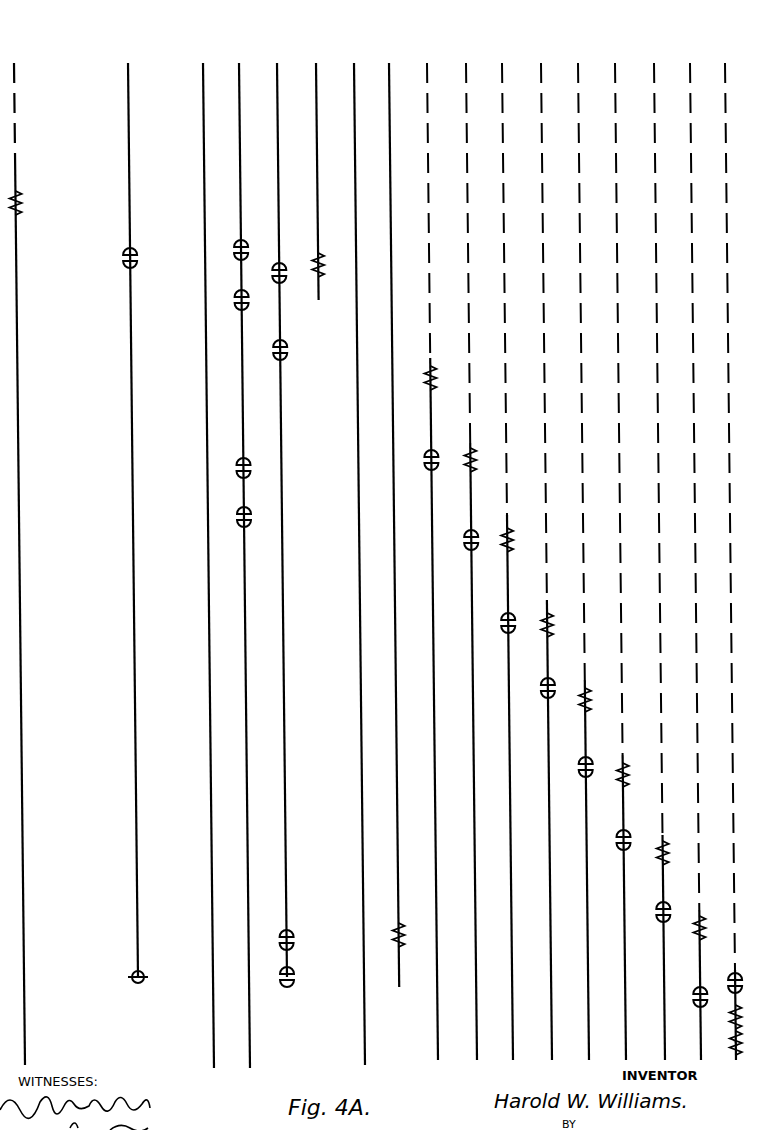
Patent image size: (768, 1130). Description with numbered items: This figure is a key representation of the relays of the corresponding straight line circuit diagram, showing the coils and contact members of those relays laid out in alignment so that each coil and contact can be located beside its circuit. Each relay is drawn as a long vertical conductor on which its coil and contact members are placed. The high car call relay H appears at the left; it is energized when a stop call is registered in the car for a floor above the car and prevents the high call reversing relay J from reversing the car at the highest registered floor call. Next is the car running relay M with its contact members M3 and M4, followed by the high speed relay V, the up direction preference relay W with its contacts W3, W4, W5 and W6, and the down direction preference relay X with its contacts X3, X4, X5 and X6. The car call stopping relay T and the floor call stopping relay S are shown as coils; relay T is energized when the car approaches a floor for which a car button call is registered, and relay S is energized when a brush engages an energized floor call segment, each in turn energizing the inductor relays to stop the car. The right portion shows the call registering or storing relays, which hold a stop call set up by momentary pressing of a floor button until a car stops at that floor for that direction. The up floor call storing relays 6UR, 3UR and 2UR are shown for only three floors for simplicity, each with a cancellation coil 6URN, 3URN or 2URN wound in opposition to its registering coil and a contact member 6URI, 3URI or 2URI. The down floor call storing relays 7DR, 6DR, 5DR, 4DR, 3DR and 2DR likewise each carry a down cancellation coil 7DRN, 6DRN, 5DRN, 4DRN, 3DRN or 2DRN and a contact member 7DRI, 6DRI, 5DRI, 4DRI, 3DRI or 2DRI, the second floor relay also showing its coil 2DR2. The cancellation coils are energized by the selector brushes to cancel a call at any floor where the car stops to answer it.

The high car call relay H is at (12, 550).
The car running relay M is at (123, 506).
The car running relay contact M3 is at (127, 254).
The car running relay contact M4 is at (137, 985).
The high speed relay V is at (199, 553).
The up direction preference relay W is at (234, 551).
The up direction preference relay contact W3 is at (239, 246).
The up direction preference relay contact W4 is at (239, 304).
The up direction preference relay contact W5 is at (241, 462).
The up direction preference relay contact W6 is at (241, 522).
The down direction preference relay X is at (272, 506).
The down direction preference relay contact X3 is at (277, 280).
The down direction preference relay contact X4 is at (278, 356).
The down direction preference relay contact X5 is at (284, 936).
The down direction preference relay contact X6 is at (284, 982).
The car call stopping relay T is at (319, 300).
The high call reversing relay J is at (350, 554).
The floor call stopping relay S is at (399, 948).
The up floor call storing relay 6UR is at (430, 367).
The up cancellation coil 6URN is at (426, 457).
The up floor call storing relay contact 6URI is at (426, 465).
The up floor call storing relay 3UR is at (469, 449).
The up cancellation coil 3URN is at (466, 537).
The up floor call storing relay contact 3URI is at (466, 545).
The up floor call storing relay 2UR is at (506, 529).
The up cancellation coil 2URN is at (503, 620).
The up floor call storing relay contact 2URI is at (503, 628).
The down floor call storing relay 7DR is at (546, 614).
The down cancellation coil 7DRN is at (543, 685).
The down floor call storing relay contact 7DRI is at (543, 693).
The down floor call storing relay 6DR is at (584, 689).
The down cancellation coil 6DRN is at (581, 764).
The down floor call storing relay contact 6DRI is at (581, 772).
The down floor call storing relay 5DR is at (621, 764).
The down cancellation coil 5DRN is at (618, 837).
The down floor call storing relay contact 5DRI is at (618, 845).
The down floor call storing relay 4DR is at (661, 842).
The down cancellation coil 4DRN is at (658, 909).
The down floor call storing relay contact 4DRI is at (658, 917).
The down floor call storing relay 3DR is at (698, 917).
The down cancellation coil 3DRN is at (695, 994).
The down floor call storing relay contact 3DRI is at (695, 1002).
The down floor call storing relay 2DR is at (722, 539).
The down floor call storing relay contact 2DRI is at (732, 976).
The down floor call storing relay coil 2DR2 is at (731, 1012).
The down cancellation coil 2DRN is at (731, 1043).